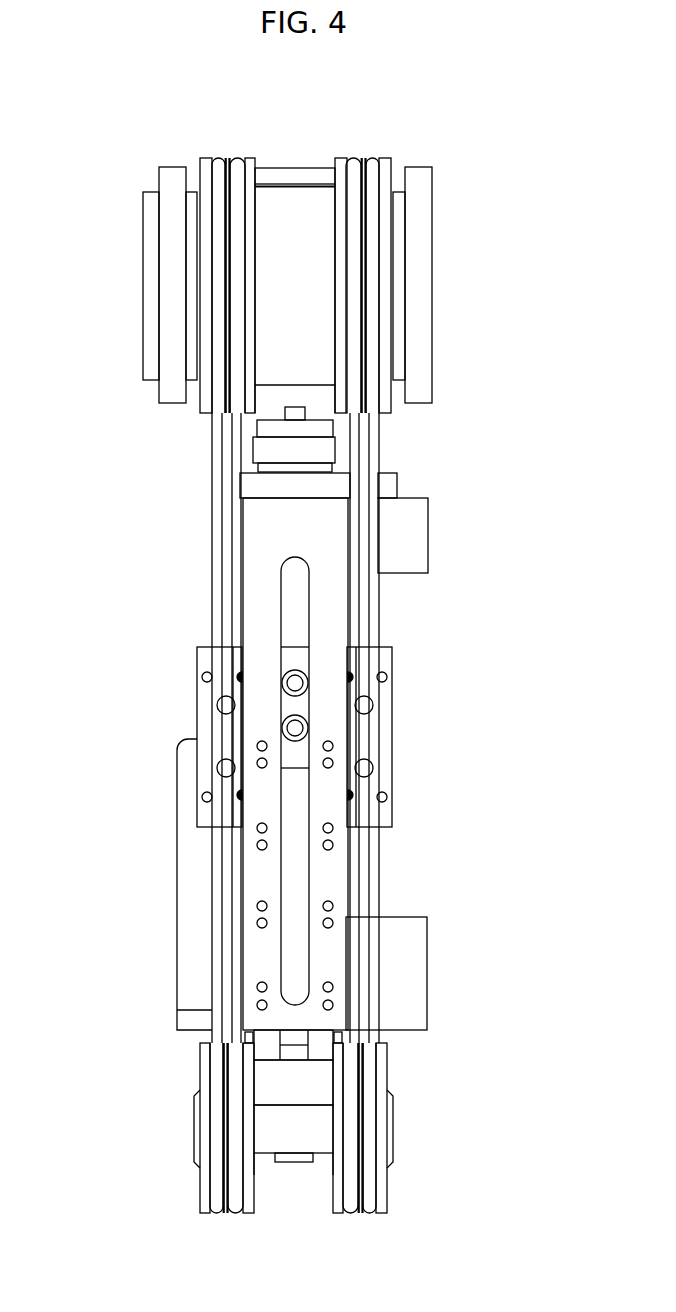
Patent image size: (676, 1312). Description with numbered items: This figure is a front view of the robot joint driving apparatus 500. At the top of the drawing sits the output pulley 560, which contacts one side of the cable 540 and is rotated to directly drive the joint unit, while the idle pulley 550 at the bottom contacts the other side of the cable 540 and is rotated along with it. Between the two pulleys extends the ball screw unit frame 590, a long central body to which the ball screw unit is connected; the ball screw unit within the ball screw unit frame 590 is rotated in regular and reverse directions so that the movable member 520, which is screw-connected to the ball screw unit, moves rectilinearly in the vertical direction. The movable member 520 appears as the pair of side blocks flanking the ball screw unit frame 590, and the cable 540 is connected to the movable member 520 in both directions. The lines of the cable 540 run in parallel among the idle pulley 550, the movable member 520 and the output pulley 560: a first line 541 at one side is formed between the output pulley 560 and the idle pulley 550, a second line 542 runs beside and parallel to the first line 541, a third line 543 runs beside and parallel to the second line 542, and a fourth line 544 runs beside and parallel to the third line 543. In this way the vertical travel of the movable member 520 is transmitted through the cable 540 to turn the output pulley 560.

The robot joint driving apparatus 500 is at (121, 107).
The output pulley 560 is at (433, 273).
The cable 540 is at (198, 523).
The first line 541 is at (240, 453).
The second line 542 is at (215, 423).
The third line 543 is at (352, 453).
The fourth line 544 is at (375, 423).
The movable member 520 is at (407, 782).
The ball screw unit frame 590 is at (350, 868).
The idle pulley 550 is at (404, 1114).